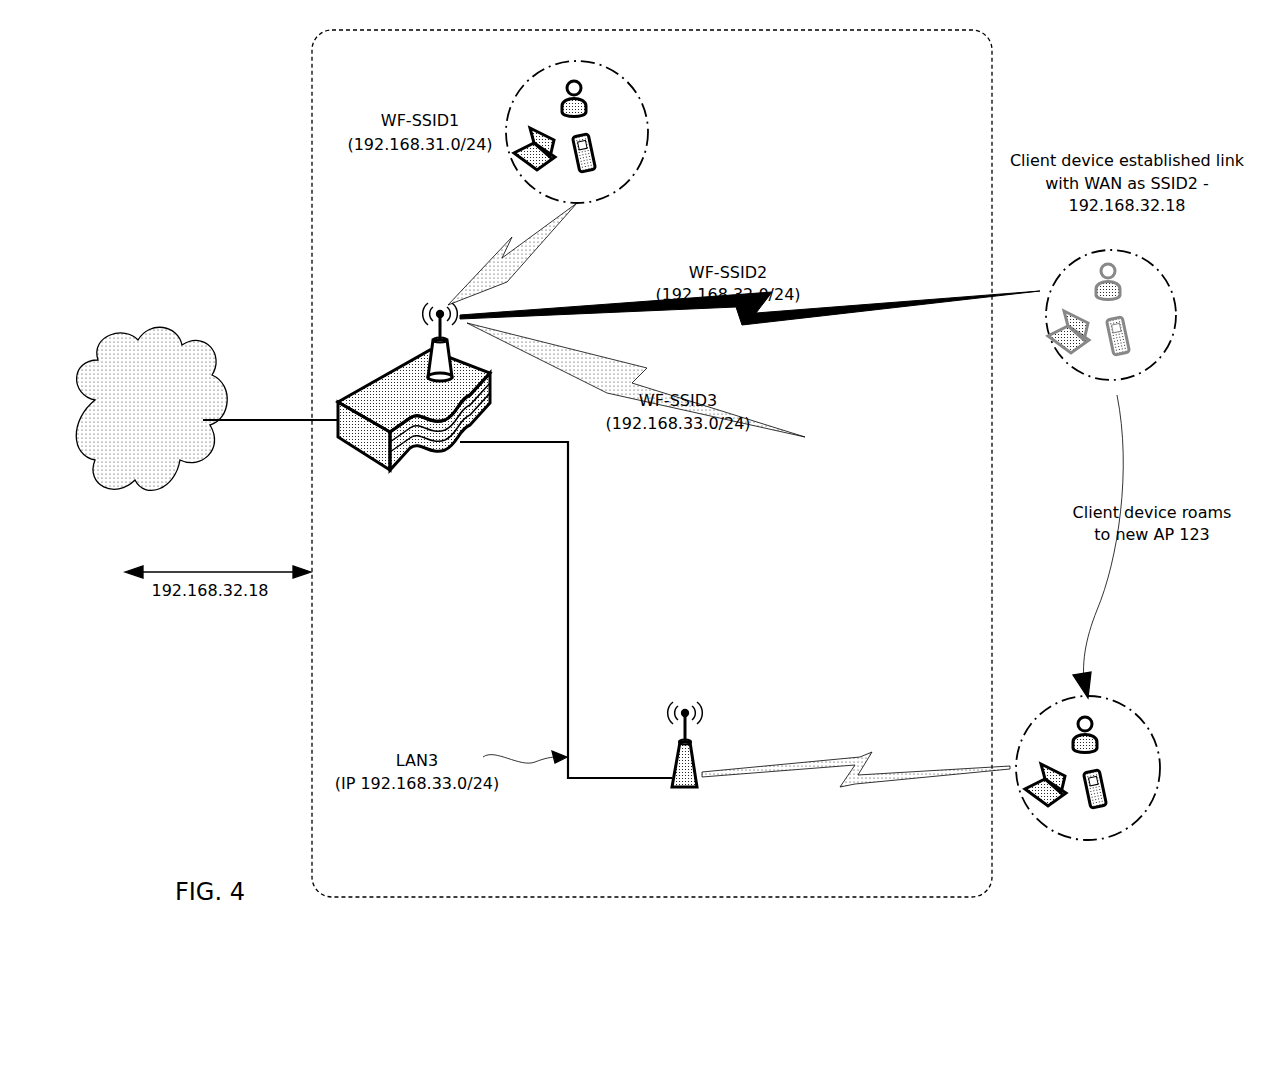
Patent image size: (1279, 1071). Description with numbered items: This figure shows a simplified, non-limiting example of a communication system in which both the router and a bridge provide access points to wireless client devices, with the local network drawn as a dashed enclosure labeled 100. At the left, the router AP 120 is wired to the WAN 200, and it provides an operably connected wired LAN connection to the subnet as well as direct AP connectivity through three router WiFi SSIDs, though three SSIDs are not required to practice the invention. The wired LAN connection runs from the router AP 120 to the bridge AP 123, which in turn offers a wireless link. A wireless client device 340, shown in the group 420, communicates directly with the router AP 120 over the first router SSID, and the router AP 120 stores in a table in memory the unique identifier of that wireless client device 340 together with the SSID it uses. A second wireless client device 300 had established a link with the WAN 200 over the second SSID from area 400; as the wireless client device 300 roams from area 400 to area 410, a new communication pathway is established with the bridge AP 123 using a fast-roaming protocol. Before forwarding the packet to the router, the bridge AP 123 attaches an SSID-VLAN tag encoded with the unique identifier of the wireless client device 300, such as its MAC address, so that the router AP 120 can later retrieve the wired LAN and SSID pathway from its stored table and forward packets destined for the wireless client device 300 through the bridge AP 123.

The network system 100 is at (652, 463).
The router AP 120 is at (414, 391).
The bridge AP 123 is at (683, 747).
The WAN 200 is at (151, 408).
The wireless client device 300 is at (1077, 536).
The wireless client device 340 is at (555, 126).
The area 400 is at (1175, 292).
The area 410 is at (1150, 722).
The client device group on WF-SSID1 420 is at (648, 100).